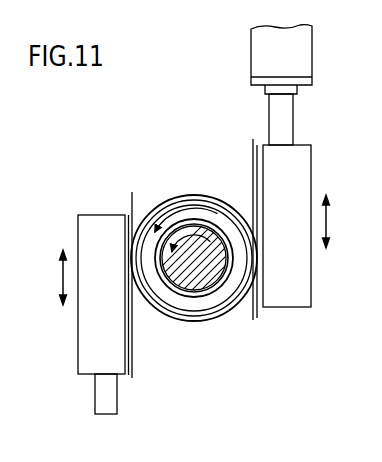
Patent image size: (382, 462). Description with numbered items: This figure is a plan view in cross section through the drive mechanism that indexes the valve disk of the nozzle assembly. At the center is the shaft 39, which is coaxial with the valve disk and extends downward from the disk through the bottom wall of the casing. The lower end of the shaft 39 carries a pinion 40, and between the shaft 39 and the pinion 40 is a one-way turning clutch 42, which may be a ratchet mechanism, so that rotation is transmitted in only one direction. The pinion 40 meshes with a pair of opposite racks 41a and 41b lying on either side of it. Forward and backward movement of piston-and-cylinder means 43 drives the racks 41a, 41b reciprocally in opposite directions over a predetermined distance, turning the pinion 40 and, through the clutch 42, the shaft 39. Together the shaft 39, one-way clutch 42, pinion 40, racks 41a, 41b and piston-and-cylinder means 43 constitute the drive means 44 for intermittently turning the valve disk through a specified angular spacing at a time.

The shaft 39 is at (203, 285).
The pinion 40 is at (193, 312).
The rack 41a is at (82, 349).
The rack 41b is at (285, 290).
The one-way turning clutch 42 is at (210, 223).
The piston-and-cylinder means 43 is at (268, 53).
The drive means 44 is at (158, 200).